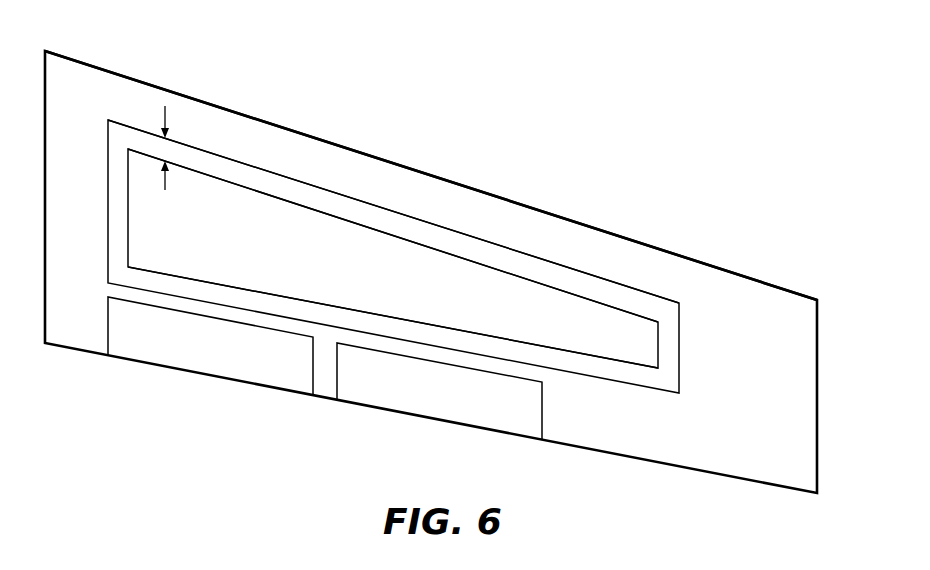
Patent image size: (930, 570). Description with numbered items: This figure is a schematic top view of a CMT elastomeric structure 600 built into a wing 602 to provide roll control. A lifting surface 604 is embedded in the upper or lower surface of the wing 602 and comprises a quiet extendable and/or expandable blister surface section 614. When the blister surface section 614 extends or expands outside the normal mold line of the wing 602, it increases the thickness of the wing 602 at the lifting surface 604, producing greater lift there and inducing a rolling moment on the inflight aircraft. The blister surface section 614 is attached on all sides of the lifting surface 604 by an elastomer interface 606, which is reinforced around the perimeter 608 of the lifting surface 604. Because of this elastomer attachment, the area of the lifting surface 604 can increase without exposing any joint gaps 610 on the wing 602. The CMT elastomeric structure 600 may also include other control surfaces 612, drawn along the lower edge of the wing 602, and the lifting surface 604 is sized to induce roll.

The CMT elastomeric structure 600 is at (683, 71).
The wing 602 is at (258, 118).
The lifting surface 604 is at (373, 262).
The elastomer interface 606 is at (672, 343).
The perimeter 608 is at (541, 260).
The joint gaps 610 is at (165, 106).
The other control surfaces 612 is at (170, 368).
The blister surface section 614 is at (276, 257).